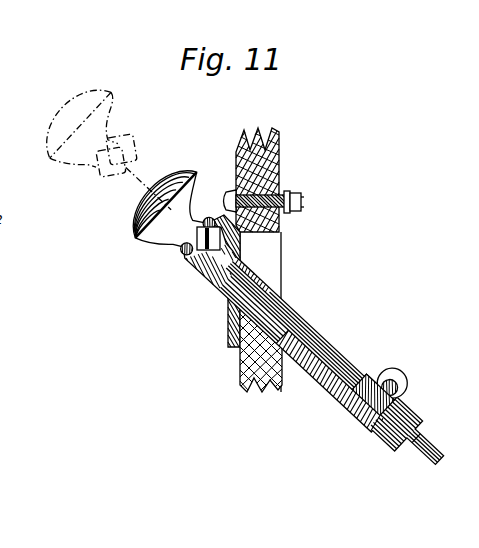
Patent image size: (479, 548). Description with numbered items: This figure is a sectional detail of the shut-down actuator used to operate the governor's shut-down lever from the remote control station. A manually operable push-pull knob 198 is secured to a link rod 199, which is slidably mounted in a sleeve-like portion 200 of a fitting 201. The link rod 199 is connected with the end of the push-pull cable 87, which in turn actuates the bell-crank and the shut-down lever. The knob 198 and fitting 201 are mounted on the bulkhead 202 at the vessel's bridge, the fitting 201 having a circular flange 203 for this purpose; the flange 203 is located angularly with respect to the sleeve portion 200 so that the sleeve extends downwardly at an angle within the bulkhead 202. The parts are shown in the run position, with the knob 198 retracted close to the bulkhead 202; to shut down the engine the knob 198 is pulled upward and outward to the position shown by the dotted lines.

The push-pull knob 198 is at (165, 184).
The link rod 199 is at (298, 327).
The sleeve-like portion 200 is at (313, 374).
The fitting 201 is at (219, 301).
The bulkhead 202 is at (247, 364).
The circular flange 203 is at (237, 186).
The push-pull cable 87 is at (428, 445).